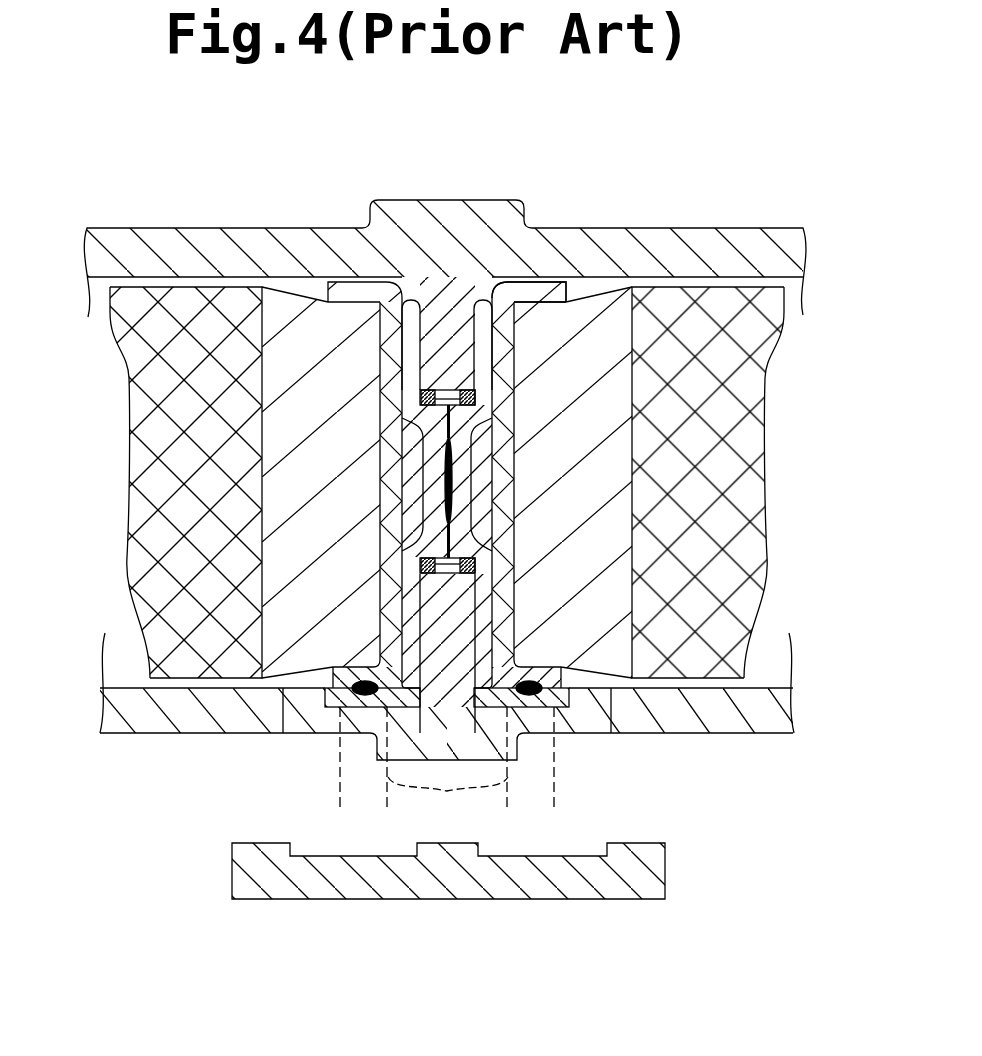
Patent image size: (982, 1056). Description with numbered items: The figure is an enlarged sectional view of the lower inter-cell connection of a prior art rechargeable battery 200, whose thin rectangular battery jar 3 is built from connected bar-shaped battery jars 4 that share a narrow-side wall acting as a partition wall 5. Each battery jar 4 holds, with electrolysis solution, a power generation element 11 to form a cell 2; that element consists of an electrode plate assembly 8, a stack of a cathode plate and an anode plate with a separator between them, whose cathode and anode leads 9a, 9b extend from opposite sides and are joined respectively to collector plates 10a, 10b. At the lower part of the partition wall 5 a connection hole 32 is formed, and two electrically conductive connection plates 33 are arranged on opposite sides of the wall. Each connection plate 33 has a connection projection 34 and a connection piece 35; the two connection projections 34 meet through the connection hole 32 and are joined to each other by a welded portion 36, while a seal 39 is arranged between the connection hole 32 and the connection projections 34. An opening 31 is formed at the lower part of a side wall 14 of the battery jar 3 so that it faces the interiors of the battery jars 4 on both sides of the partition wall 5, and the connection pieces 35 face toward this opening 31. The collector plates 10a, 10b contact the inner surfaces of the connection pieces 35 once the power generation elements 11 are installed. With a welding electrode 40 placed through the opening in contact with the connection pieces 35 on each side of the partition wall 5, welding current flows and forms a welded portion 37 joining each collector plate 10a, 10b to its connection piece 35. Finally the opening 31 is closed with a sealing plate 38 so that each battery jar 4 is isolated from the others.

The rechargeable battery 200 is at (440, 473).
The cell 2 is at (304, 286).
The rectangular battery jar 3 is at (676, 242).
The battery jar 4 is at (95, 444).
The partition wall 5 is at (426, 388).
The electrode plate assembly 8 is at (175, 475).
The lead 9a is at (600, 548).
The lead 9b is at (290, 540).
The collector plate 10a is at (510, 427).
The collector plate 10b is at (392, 387).
The power generation element 11 is at (118, 402).
The side wall 14 is at (738, 720).
The opening 31 is at (287, 737).
The connection hole 32 is at (520, 396).
The connection plate 33 is at (410, 606).
The connection projection 34 is at (380, 601).
The connection piece 35 is at (362, 694).
The welded portion 36 is at (438, 480).
The welded portion 37 is at (397, 809).
The sealing plate 38 is at (452, 889).
The seal 39 is at (465, 390).
The welding electrode 40 is at (448, 799).